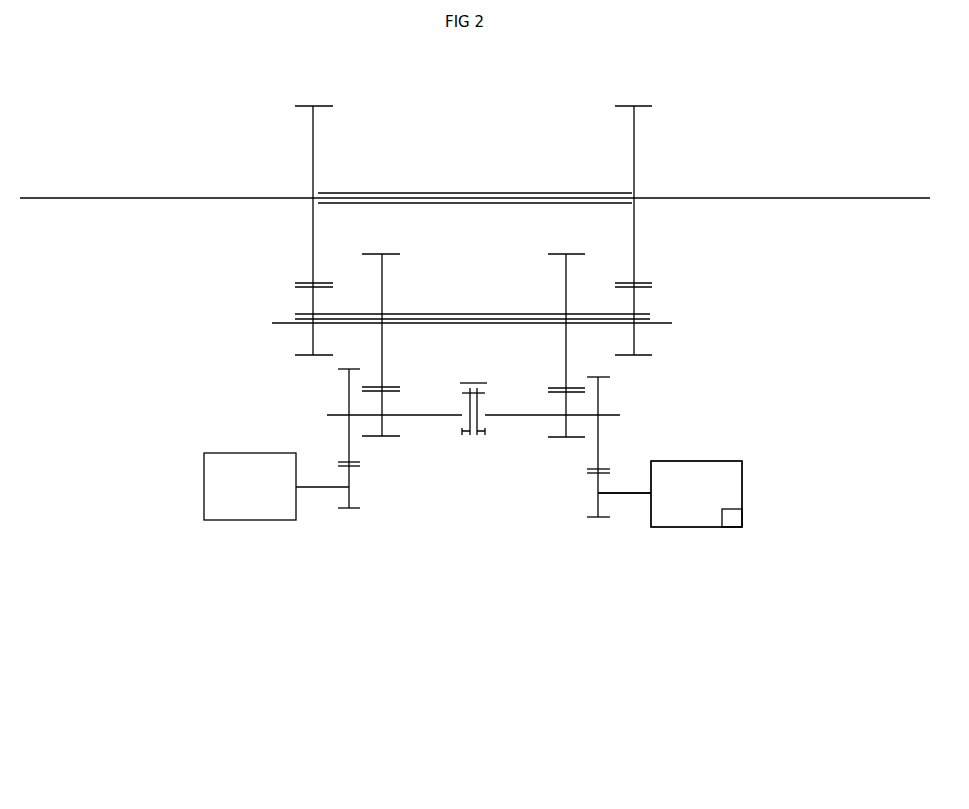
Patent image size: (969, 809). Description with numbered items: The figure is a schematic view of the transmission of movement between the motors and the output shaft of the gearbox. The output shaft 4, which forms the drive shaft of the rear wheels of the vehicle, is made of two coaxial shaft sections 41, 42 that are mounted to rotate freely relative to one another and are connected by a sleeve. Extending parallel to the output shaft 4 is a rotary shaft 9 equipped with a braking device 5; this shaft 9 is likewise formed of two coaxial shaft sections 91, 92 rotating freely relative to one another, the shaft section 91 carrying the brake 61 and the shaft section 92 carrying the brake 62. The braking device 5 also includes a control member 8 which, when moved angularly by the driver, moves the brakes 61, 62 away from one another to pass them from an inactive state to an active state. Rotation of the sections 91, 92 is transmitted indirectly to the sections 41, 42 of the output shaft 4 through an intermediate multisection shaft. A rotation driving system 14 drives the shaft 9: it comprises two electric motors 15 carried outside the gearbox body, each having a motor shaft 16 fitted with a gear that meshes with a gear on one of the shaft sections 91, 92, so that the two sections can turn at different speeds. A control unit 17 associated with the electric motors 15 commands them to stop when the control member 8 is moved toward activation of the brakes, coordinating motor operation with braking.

The output shaft 4 is at (473, 191).
The shaft section 41 is at (126, 198).
The shaft section 42 is at (704, 198).
The braking device 5 is at (472, 458).
The brake 61 is at (463, 443).
The brake 62 is at (484, 443).
The control member 8 is at (468, 561).
The rotary shaft 9 is at (549, 485).
The shaft section 91 is at (422, 416).
The shaft section 92 is at (527, 416).
The rotation driving system 14 is at (713, 556).
The electric motor 15 is at (224, 453).
The motor shaft 16 is at (325, 487).
The control unit 17 is at (735, 518).